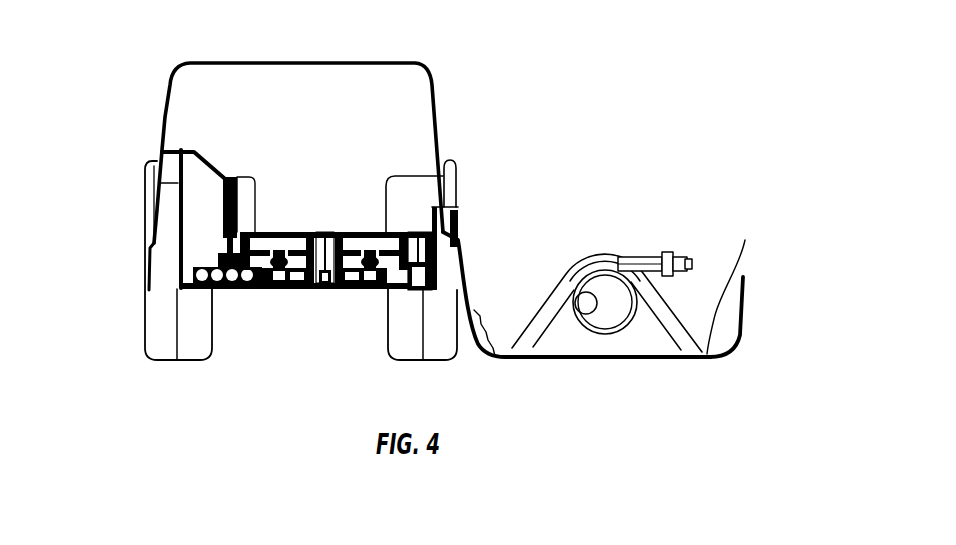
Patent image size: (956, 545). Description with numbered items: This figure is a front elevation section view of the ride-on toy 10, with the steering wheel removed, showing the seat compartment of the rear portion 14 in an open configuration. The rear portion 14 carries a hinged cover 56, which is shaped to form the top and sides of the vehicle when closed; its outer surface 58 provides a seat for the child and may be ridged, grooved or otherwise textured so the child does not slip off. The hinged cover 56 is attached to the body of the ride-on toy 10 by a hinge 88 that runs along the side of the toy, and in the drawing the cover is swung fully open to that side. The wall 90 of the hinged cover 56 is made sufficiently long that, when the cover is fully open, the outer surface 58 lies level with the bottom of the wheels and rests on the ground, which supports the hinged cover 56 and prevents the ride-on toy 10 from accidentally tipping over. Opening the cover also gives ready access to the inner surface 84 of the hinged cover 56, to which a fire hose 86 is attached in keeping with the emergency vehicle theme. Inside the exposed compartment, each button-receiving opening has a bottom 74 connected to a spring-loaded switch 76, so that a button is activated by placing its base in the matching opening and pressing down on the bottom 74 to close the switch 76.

The ride-on toy 10 is at (120, 115).
The rear portion 14 is at (196, 235).
The hinged cover 56 is at (742, 310).
The outer surface 58 is at (617, 358).
The bottom 74 is at (382, 243).
The spring-loaded switch 76 is at (280, 270).
The inner surface 84 is at (733, 285).
The fire hose 86 is at (603, 262).
The hinge 88 is at (454, 208).
The wall 90 is at (468, 278).